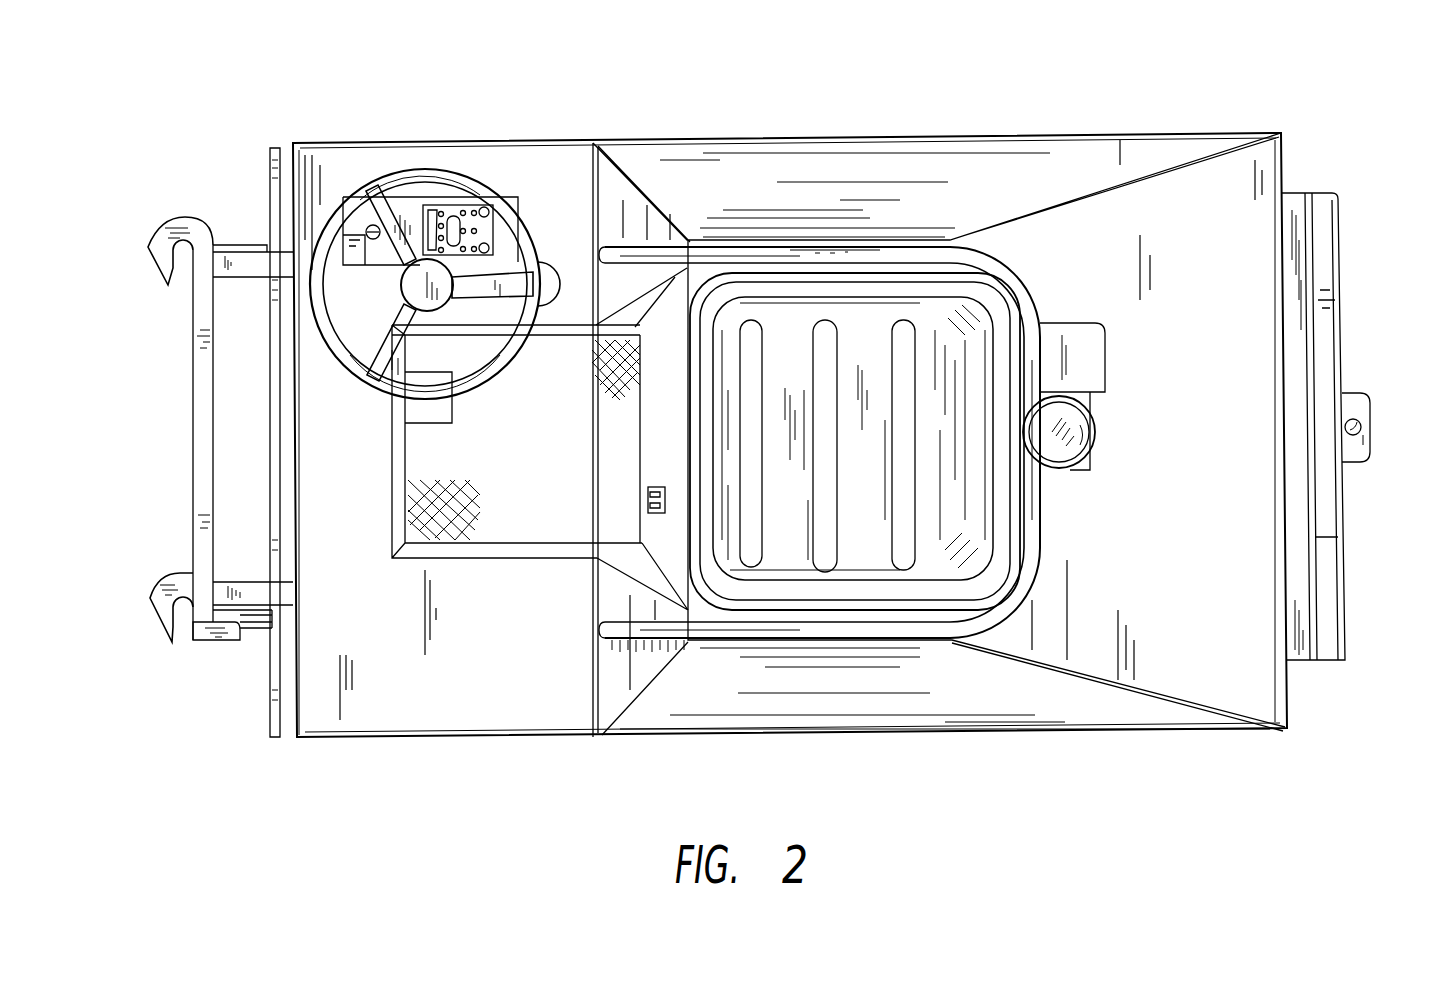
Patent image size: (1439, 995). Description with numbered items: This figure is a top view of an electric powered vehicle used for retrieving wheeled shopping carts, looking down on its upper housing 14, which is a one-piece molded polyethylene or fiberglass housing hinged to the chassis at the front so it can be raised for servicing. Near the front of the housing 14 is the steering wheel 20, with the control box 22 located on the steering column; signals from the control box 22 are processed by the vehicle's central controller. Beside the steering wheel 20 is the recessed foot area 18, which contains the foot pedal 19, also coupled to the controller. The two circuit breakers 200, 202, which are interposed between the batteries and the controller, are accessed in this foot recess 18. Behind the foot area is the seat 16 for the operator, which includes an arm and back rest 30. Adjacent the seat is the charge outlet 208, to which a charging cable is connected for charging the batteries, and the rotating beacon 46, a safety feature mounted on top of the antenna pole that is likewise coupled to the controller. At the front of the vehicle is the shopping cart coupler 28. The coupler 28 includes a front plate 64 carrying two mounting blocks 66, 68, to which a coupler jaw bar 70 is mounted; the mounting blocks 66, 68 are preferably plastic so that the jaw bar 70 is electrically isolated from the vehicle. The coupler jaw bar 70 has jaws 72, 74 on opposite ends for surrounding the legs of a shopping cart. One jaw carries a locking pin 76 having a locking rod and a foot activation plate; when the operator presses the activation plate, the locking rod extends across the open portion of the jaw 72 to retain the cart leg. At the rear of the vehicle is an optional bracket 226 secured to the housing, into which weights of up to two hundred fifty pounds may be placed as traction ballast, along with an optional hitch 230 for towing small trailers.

The upper housing 14 is at (363, 160).
The seat 16 is at (772, 290).
The recessed foot area 18 is at (497, 517).
The foot pedal 19 is at (430, 415).
The steering wheel 20 is at (422, 168).
The control box 22 is at (380, 262).
The shopping cart coupler 28 is at (194, 664).
The arm and back rest 30 is at (897, 250).
The rotating beacon 46 is at (1082, 435).
The front plate 64 is at (280, 692).
The mounting block 66 is at (252, 273).
The mounting block 68 is at (262, 580).
The coupler jaw bar 70 is at (195, 450).
The jaw 72 is at (153, 232).
The jaw 74 is at (152, 597).
The locking pin 76 is at (188, 627).
The circuit breaker 200 is at (647, 485).
The circuit breaker 202 is at (647, 505).
The charge outlet 208 is at (1077, 340).
The bracket 226 is at (1295, 192).
The hitch 230 is at (1368, 408).